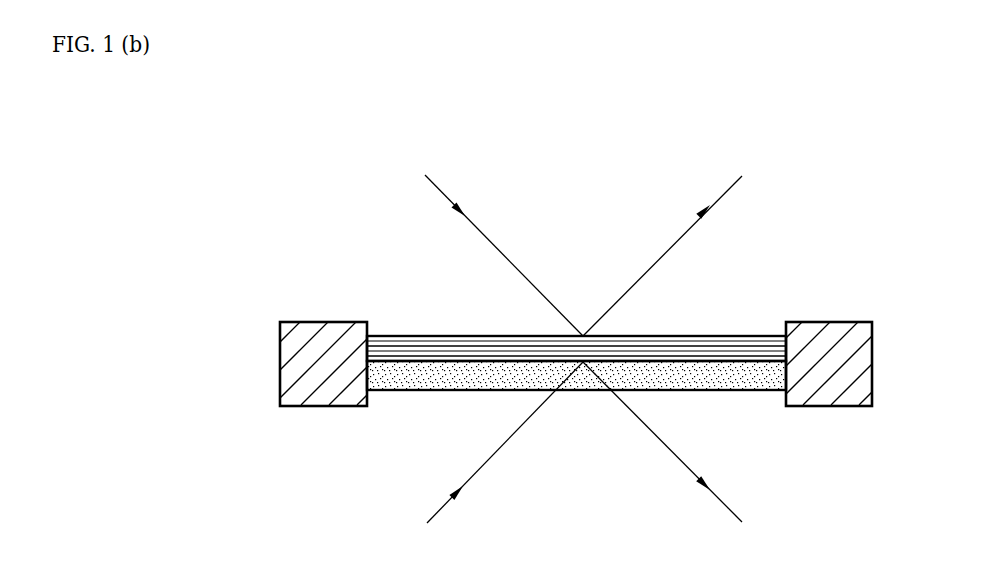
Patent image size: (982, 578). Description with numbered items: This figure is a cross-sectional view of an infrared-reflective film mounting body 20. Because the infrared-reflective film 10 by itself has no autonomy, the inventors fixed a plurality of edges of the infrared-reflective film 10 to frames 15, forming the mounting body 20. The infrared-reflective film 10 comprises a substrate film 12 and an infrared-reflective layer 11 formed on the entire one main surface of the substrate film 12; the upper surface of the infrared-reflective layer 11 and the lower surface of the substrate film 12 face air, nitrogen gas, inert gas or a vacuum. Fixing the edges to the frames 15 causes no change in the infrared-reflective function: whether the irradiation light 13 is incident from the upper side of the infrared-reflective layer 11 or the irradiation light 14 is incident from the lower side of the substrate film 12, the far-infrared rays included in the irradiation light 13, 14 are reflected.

The infrared-reflective film 10 is at (576, 340).
The infrared-reflective layer 11 is at (703, 335).
The substrate film 12 is at (702, 390).
The irradiation light 13 is at (490, 245).
The irradiation light 14 is at (490, 455).
The frames 15 is at (280, 321).
The infrared-reflective film mounting body 20 is at (835, 252).